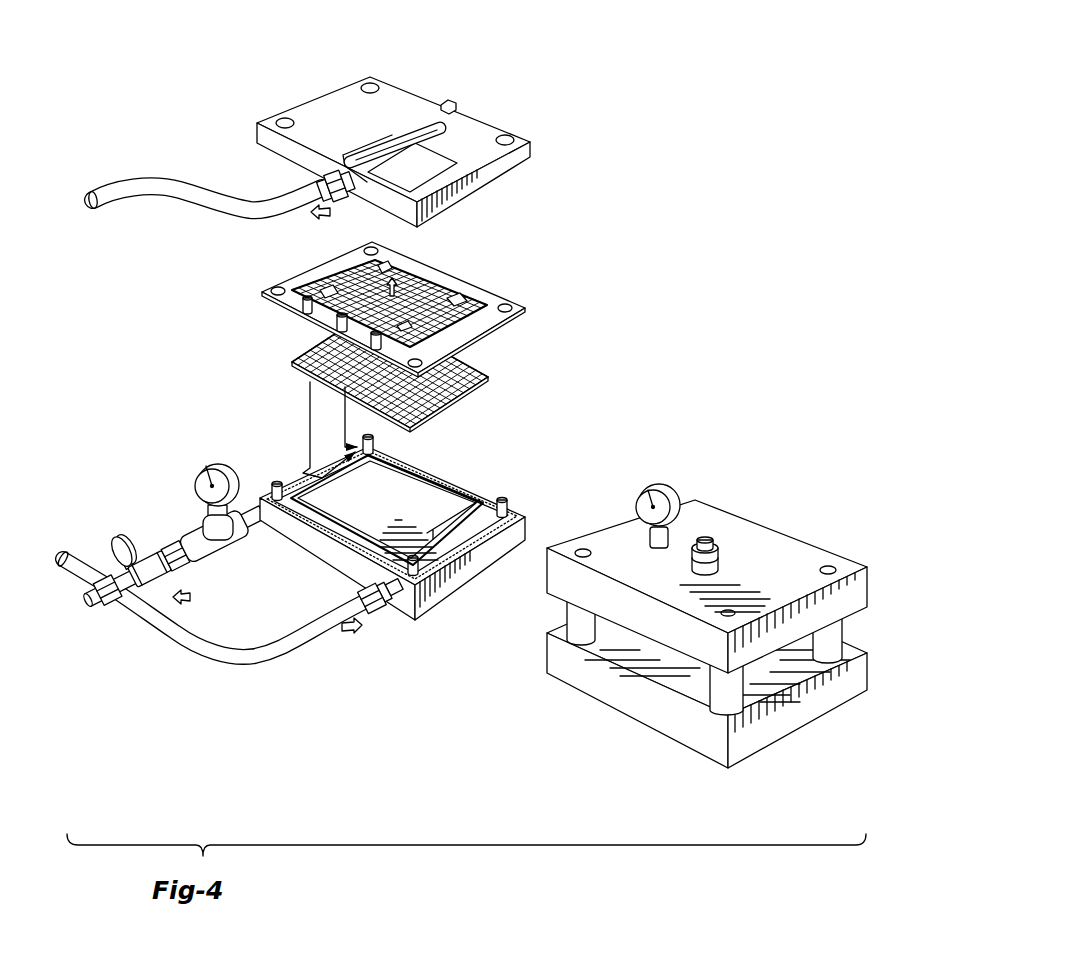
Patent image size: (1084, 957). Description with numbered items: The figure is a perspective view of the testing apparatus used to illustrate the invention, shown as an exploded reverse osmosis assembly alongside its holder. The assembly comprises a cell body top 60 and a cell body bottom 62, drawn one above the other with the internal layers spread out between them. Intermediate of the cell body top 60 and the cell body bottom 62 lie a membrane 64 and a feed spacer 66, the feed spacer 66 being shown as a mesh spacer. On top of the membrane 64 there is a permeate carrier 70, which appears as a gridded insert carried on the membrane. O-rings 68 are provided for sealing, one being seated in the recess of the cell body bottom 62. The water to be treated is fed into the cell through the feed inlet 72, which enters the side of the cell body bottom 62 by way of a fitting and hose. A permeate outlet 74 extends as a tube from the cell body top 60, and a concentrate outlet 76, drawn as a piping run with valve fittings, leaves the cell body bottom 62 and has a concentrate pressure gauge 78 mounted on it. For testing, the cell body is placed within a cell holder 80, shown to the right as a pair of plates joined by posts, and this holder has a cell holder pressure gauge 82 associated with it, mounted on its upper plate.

The cell body top 60 is at (258, 116).
The cell body bottom 62 is at (417, 623).
The membrane 64 is at (258, 294).
The feed spacer 66 is at (288, 362).
The O-rings 68 is at (447, 483).
The permeate carrier 70 is at (322, 277).
The feed inlet 72 is at (378, 610).
The permeate outlet 74 is at (310, 181).
The concentrate outlet 76 is at (111, 610).
The concentrate pressure gauge 78 is at (190, 468).
The cell holder 80 is at (597, 704).
The cell holder pressure gauge 82 is at (684, 488).